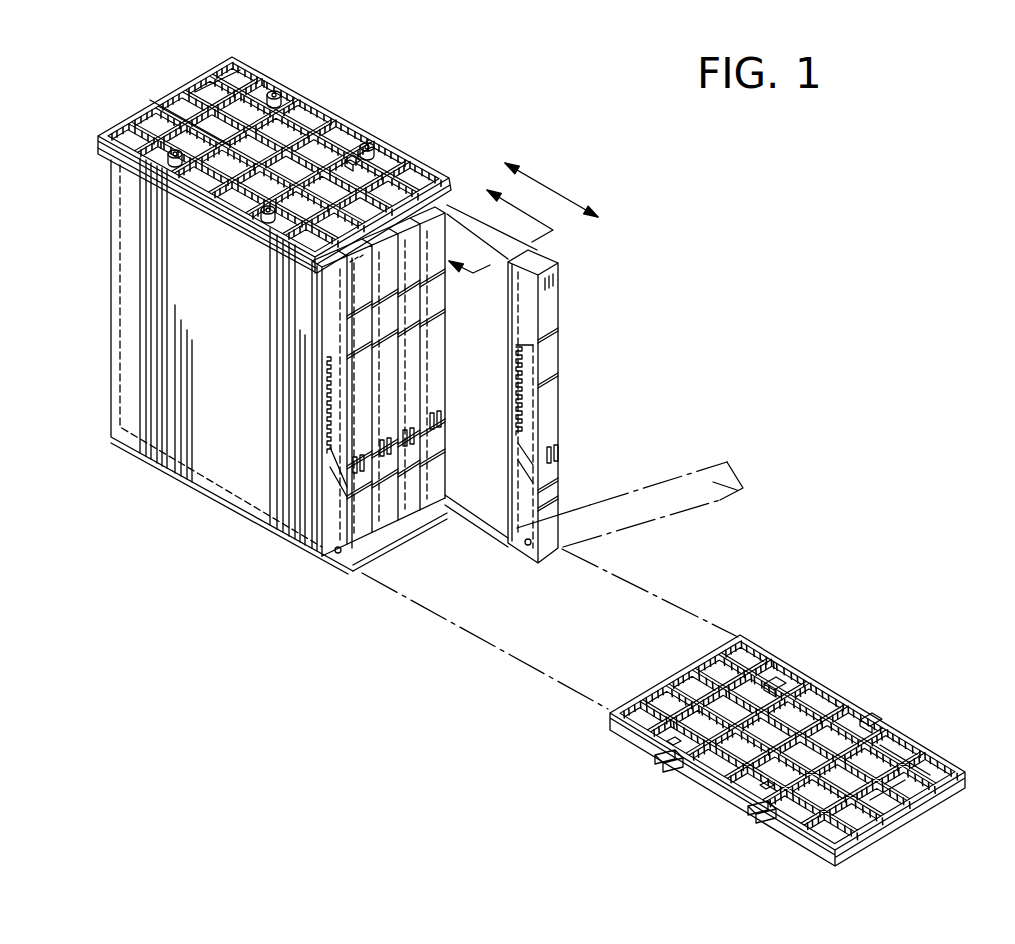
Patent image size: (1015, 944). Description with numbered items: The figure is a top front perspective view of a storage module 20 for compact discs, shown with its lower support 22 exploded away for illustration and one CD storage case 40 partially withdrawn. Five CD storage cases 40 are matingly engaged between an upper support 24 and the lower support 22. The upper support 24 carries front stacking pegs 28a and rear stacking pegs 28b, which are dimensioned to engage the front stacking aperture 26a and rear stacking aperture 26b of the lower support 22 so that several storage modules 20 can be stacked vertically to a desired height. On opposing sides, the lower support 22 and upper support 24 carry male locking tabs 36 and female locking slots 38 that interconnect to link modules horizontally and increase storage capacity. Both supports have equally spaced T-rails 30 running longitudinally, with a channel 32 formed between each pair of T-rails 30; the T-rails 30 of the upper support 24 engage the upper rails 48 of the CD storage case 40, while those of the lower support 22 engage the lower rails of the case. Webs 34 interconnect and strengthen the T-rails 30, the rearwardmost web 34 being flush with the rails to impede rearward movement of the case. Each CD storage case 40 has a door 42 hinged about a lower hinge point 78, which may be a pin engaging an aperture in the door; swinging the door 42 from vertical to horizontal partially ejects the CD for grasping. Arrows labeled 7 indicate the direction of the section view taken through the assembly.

The storage module 20 is at (490, 99).
The lower support 22 is at (767, 727).
The upper support 24 is at (254, 173).
The front stacking aperture 26a is at (765, 788).
The rear stacking aperture 26b is at (670, 743).
The front stacking peg 28a is at (375, 150).
The rear stacking peg 28b is at (283, 101).
The T-rail 30 is at (160, 103).
The channel 32 is at (200, 88).
The web 34 is at (353, 160).
The male locking tab 36 is at (255, 232).
The female locking slot 38 is at (763, 820).
The CD storage case 40 is at (555, 421).
The CD storage case door 42 is at (766, 466).
The upper rail 48 is at (458, 208).
The lower hinge point 78 is at (522, 548).
The section line for FIG. 7 is at (523, 232).